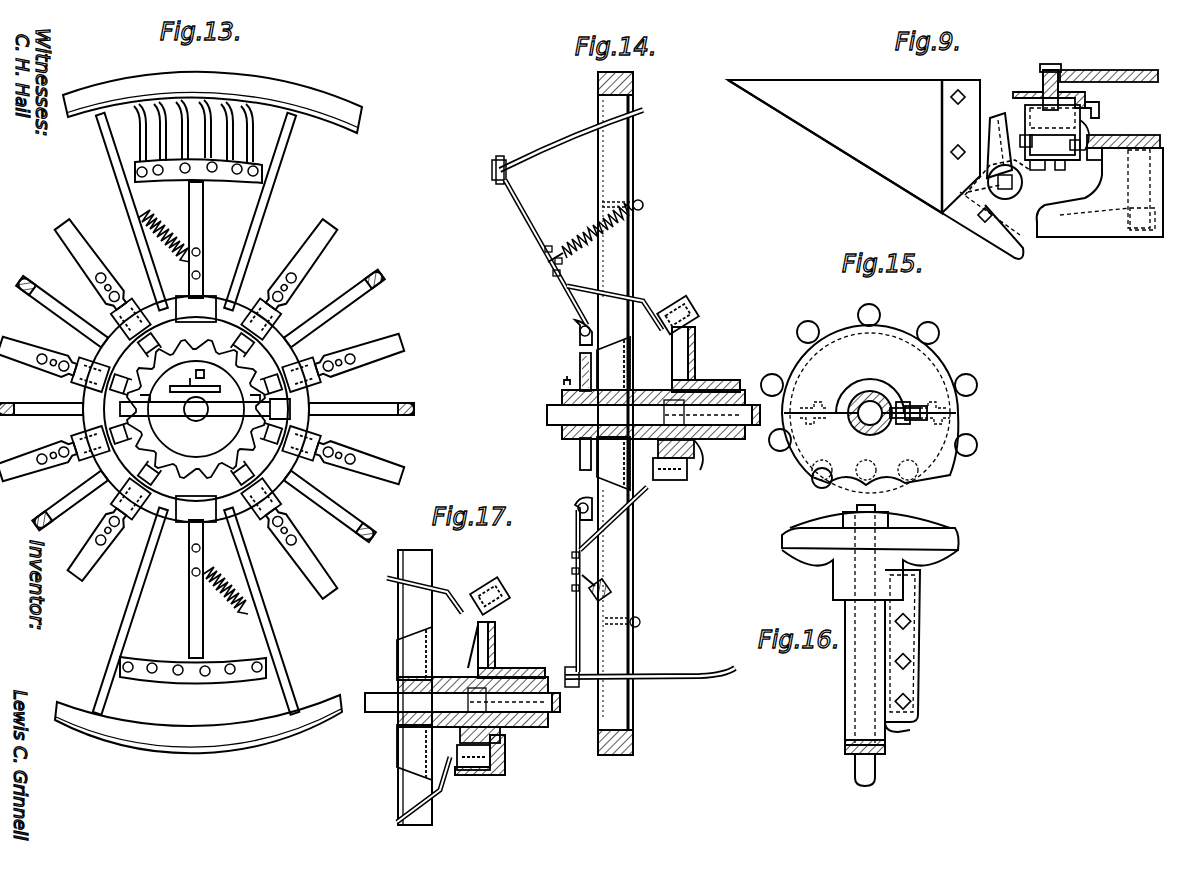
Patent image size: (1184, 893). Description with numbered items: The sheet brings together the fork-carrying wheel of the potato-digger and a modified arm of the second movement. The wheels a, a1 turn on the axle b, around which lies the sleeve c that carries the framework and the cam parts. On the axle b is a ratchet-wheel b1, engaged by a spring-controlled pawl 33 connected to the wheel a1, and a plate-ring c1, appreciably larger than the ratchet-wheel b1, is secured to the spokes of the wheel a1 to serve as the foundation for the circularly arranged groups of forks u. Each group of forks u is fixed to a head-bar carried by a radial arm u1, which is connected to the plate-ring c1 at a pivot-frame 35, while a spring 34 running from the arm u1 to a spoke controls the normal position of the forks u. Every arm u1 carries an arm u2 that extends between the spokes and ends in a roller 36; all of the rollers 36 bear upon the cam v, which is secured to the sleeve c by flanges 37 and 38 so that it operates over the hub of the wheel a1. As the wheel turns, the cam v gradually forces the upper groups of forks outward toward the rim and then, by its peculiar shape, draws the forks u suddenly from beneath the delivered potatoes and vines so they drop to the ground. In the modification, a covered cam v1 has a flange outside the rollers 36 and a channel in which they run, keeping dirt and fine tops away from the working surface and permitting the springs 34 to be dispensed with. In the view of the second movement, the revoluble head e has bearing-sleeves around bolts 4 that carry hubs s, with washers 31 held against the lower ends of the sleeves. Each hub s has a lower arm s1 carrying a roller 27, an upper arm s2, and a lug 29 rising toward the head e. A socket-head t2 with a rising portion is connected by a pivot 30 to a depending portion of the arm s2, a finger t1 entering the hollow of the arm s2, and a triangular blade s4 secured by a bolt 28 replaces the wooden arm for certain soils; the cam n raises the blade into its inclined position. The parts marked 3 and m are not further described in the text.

In FIG. 13, the wheel a1 is at (340, 102).
In FIG. 14, the wheel a1 is at (634, 86).
In FIG. 13, the forks u is at (262, 135).
In FIG. 14, the forks u is at (550, 146).
In FIG. 13, the arm u1 is at (204, 212).
In FIG. 14, the arm u1 is at (528, 228).
In FIG. 14, the arm u2 is at (640, 298).
In FIG. 17, the arm u2 is at (448, 586).
In FIG. 13, the axle b is at (197, 416).
In FIG. 14, the axle b is at (552, 413).
In FIG. 17, the axle b is at (379, 695).
In FIG. 15, the axle b is at (858, 428).
In FIG. 16, the axle b is at (860, 772).
In FIG. 13, the ratchet-wheel b1 is at (205, 394).
In FIG. 14, the ratchet-wheel b1 is at (580, 368).
In FIG. 14, the sleeve c is at (720, 440).
In FIG. 17, the sleeve c is at (530, 728).
In FIG. 15, the sleeve c is at (872, 388).
In FIG. 16, the sleeve c is at (848, 712).
In FIG. 13, the plate-ring c1 is at (288, 320).
In FIG. 14, the plate-ring c1 is at (568, 305).
In FIG. 14, the cam v is at (700, 350).
In FIG. 15, the cam v is at (942, 356).
In FIG. 16, the cam v is at (940, 543).
In FIG. 17, the covered cam v1 is at (498, 633).
In FIG. 13, the spring-controlled pawl 33 is at (125, 333).
In FIG. 13, the spring 34 is at (183, 226).
In FIG. 14, the spring 34 is at (580, 242).
In FIG. 13, the pivot-frame 35 is at (252, 300).
In FIG. 14, the pivot-frame 35 is at (578, 334).
In FIG. 14, the roller 36 is at (683, 304).
In FIG. 17, the roller 36 is at (504, 600).
In FIG. 15, the roller 36 is at (935, 332).
In FIG. 15, the flange 37 is at (912, 402).
In FIG. 16, the flange 37 is at (908, 608).
In FIG. 15, the flange 38 is at (912, 426).
In FIG. 16, the flange 38 is at (905, 728).
In FIG. 17, the wheel a is at (428, 566).
In FIG. 9, the triangular blade s4 is at (854, 146).
In FIG. 9, the arm s2 is at (1003, 114).
In FIG. 9, the arm s1 is at (1087, 168).
In FIG. 9, the hub s is at (1090, 135).
In FIG. 9, the finger t1 is at (1012, 148).
In FIG. 9, the socket-head t2 is at (982, 238).
In FIG. 9, the bracket 3 is at (1018, 94).
In FIG. 9, the bolt 4 is at (1050, 64).
In FIG. 9, the revoluble head e is at (1126, 70).
In FIG. 9, the bar m is at (1147, 146).
In FIG. 9, the cam n is at (1102, 232).
In FIG. 9, the roller 27 is at (1100, 138).
In FIG. 9, the bolt 28 is at (980, 214).
In FIG. 9, the lug 29 is at (1098, 106).
In FIG. 9, the pivot 30 is at (1016, 184).
In FIG. 9, the washer 31 is at (1072, 172).